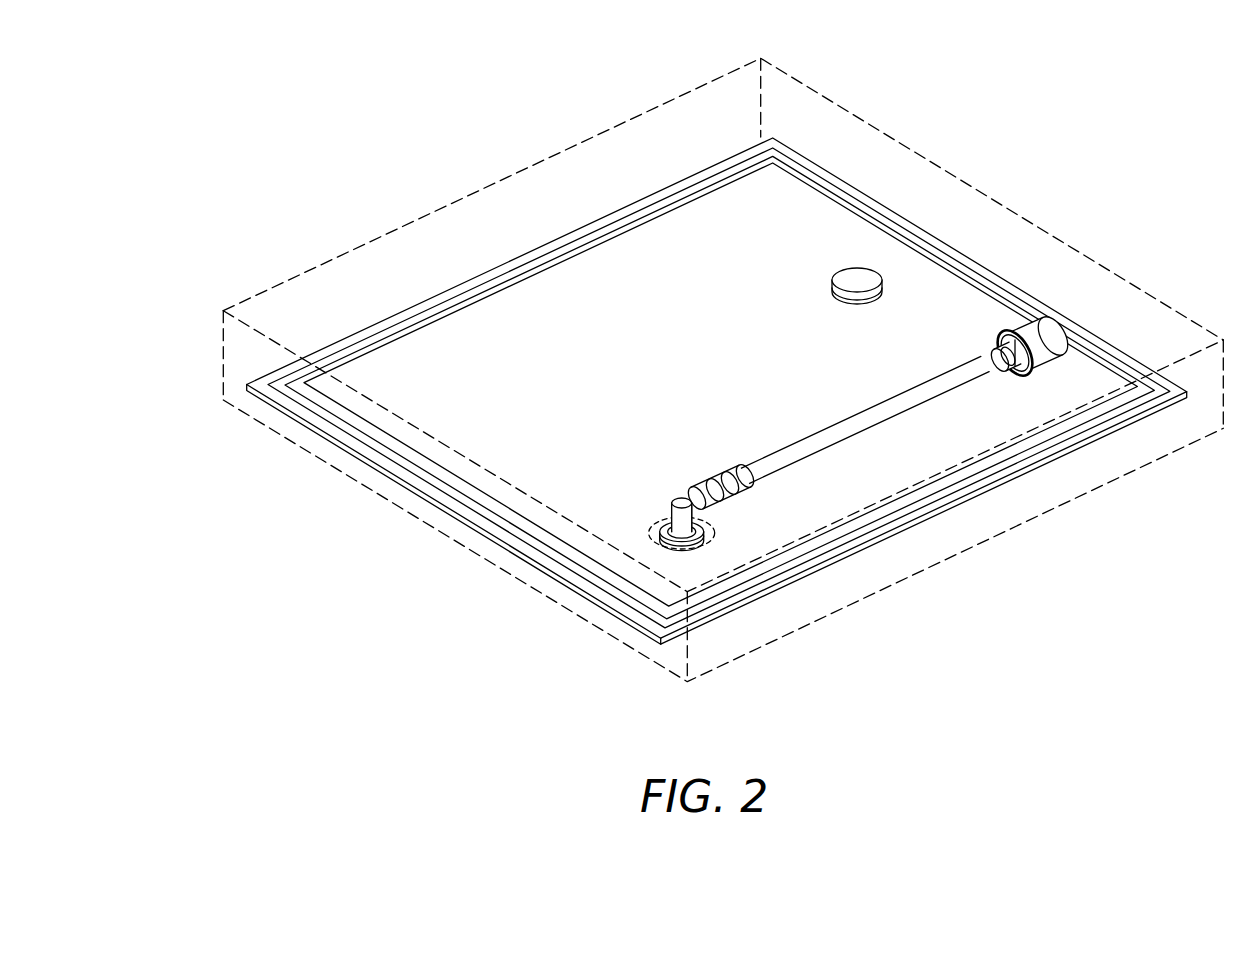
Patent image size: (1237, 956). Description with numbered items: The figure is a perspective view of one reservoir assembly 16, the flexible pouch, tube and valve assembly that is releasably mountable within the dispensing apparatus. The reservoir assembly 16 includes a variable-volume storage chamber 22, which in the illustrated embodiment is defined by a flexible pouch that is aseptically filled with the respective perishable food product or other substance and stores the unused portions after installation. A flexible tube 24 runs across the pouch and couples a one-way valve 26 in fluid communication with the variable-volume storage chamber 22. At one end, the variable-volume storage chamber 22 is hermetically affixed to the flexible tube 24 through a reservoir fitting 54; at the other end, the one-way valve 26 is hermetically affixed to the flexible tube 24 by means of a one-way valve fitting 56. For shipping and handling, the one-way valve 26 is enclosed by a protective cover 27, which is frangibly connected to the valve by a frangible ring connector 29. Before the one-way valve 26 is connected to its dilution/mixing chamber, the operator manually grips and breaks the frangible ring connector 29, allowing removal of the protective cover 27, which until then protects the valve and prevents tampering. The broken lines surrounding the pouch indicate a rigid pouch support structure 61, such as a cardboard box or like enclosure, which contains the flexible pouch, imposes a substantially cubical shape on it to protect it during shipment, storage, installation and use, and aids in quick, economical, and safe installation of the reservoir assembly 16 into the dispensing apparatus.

The reservoir assembly 16 is at (398, 568).
The variable-volume storage chamber 22 is at (801, 245).
The flexible tube 24 is at (886, 410).
The one-way valve 26 is at (1043, 330).
The protective cover 27 is at (1049, 356).
The frangible ring connector 29 is at (1003, 375).
The reservoir fitting 54 is at (718, 530).
The one-way valve fitting 56 is at (1018, 380).
The rigid pouch support structure 61 is at (631, 121).